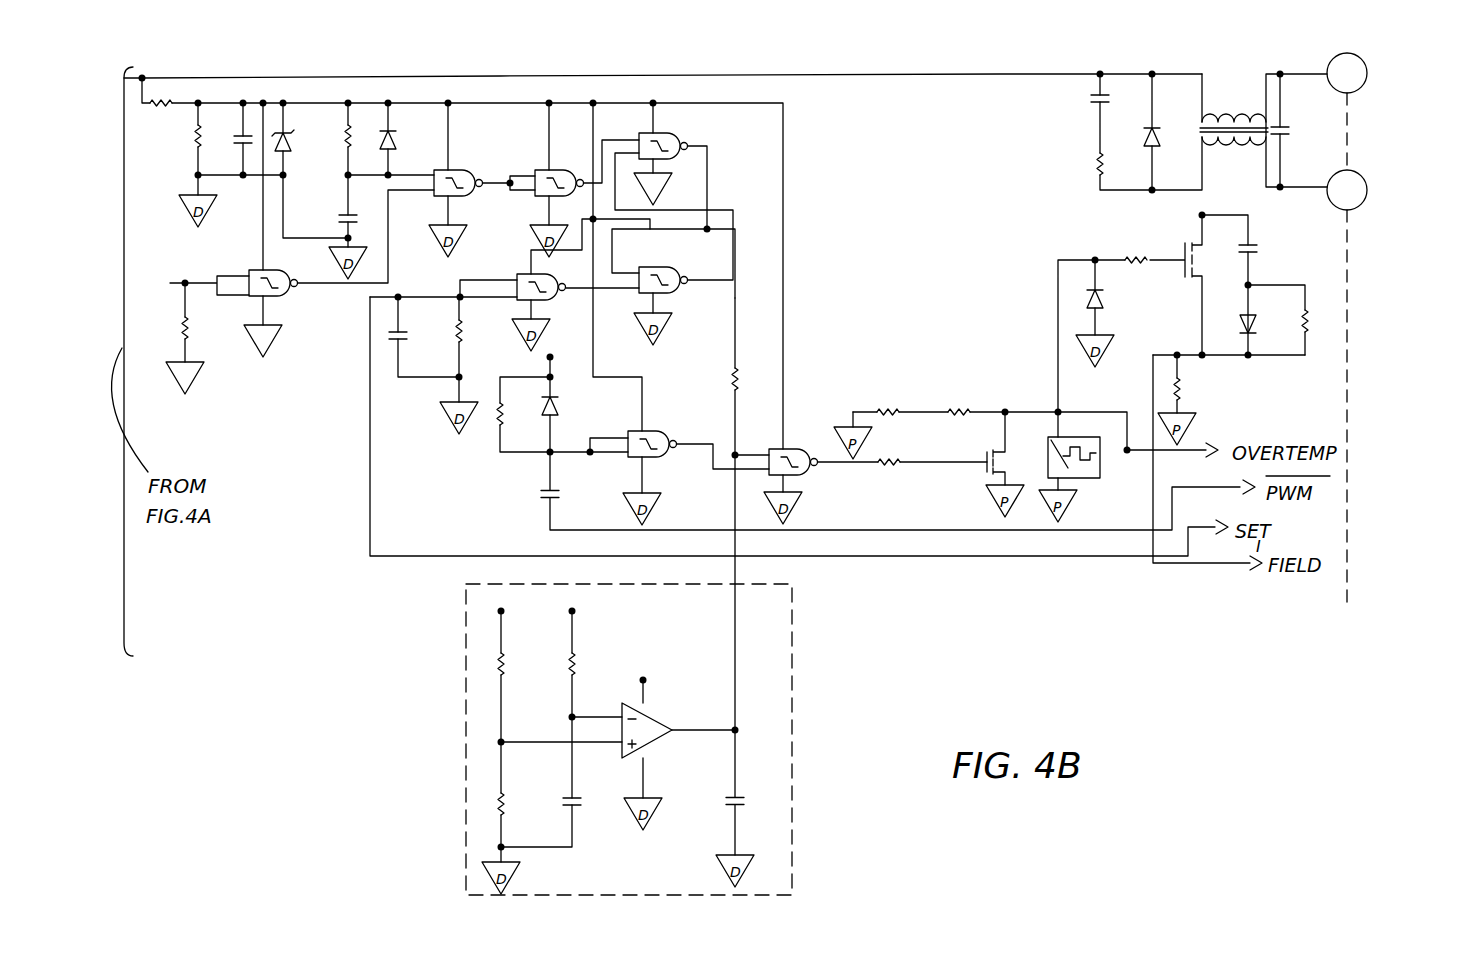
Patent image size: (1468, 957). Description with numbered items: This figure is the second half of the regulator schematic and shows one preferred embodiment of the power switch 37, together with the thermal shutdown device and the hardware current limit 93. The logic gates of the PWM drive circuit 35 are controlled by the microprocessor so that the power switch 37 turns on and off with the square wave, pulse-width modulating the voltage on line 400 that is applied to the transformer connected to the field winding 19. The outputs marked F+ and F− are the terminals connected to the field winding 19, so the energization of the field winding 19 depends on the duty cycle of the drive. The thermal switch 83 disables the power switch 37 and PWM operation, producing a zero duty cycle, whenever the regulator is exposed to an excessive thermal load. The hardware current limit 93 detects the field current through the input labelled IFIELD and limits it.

The PWM drive circuit 35 is at (297, 390).
The power switch 37 is at (1183, 250).
The thermal switch 83 is at (1085, 478).
The hardware current limit 93 is at (792, 665).
The line 400 is at (968, 75).
The field winding 19 is at (1376, 328).